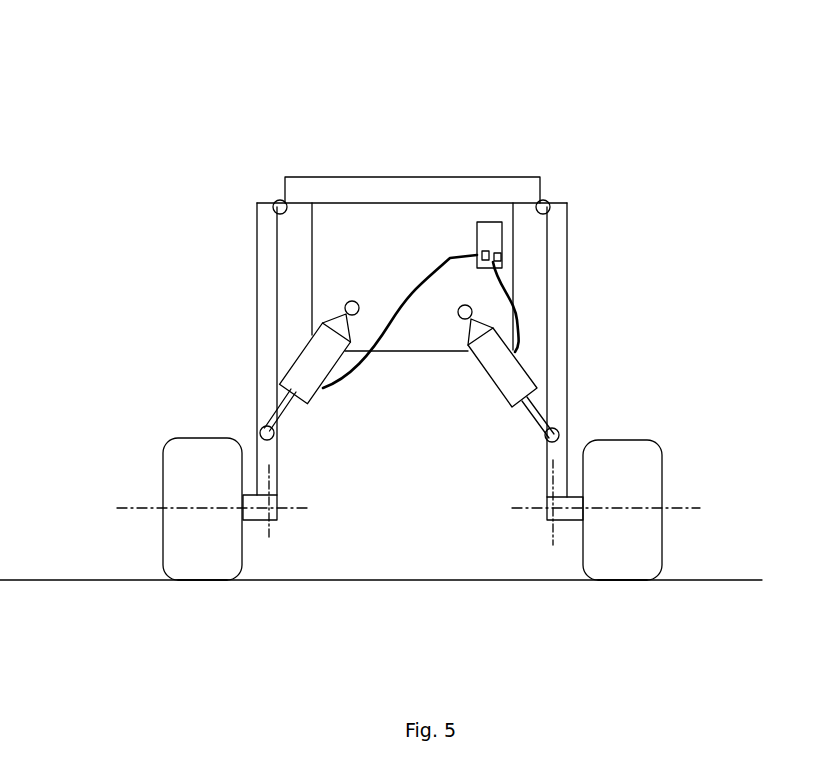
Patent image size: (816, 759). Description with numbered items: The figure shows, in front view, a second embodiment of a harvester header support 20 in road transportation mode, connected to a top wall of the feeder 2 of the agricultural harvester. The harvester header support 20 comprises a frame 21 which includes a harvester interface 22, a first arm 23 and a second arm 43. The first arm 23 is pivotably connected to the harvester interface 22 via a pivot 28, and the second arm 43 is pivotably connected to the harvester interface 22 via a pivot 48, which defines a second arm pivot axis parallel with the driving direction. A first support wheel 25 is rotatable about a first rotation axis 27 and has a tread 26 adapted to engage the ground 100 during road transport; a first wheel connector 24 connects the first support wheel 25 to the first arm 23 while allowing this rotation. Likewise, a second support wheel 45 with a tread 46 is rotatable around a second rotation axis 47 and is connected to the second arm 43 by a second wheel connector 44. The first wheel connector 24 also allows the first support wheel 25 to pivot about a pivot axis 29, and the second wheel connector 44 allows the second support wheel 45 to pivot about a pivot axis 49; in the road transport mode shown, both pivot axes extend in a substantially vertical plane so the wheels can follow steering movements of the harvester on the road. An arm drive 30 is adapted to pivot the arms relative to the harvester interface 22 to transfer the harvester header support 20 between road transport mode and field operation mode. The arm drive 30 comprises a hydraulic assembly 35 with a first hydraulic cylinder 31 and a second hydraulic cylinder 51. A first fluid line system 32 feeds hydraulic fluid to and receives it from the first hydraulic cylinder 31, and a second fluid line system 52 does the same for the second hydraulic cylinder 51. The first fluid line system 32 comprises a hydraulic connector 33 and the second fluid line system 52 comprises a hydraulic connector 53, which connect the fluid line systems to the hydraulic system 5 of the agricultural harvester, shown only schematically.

The feeder 2 is at (355, 255).
The hydraulic system 5 is at (500, 232).
The harvester header support 20 is at (200, 222).
The frame 21 is at (390, 172).
The harvester interface 22 is at (422, 186).
The first arm 23 is at (553, 347).
The first wheel connector 24 is at (566, 518).
The first support wheel 25 is at (643, 560).
The tread 26 is at (608, 583).
The first rotation axis 27 is at (683, 512).
The pivot 28 is at (547, 205).
The pivot axis 29 is at (553, 470).
The arm drive 30 is at (233, 385).
The first hydraulic cylinder 31 is at (546, 411).
The first fluid line system 32 is at (513, 302).
The hydraulic connector 33 is at (502, 257).
The hydraulic assembly 35 is at (277, 372).
The second arm 43 is at (262, 282).
The second wheel connector 44 is at (257, 520).
The second support wheel 45 is at (198, 565).
The tread 46 is at (190, 580).
The second rotation axis 47 is at (138, 512).
The pivot 48 is at (275, 202).
The pivot axis 49 is at (268, 470).
The second hydraulic cylinder 51 is at (302, 378).
The second fluid line system 52 is at (358, 367).
The hydraulic connector 53 is at (477, 242).
The ground 100 is at (375, 585).